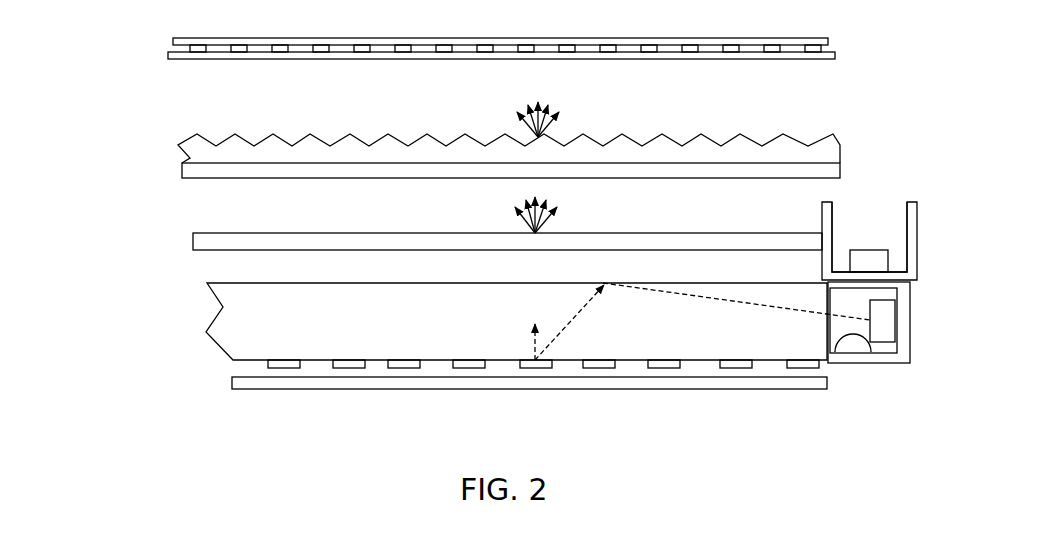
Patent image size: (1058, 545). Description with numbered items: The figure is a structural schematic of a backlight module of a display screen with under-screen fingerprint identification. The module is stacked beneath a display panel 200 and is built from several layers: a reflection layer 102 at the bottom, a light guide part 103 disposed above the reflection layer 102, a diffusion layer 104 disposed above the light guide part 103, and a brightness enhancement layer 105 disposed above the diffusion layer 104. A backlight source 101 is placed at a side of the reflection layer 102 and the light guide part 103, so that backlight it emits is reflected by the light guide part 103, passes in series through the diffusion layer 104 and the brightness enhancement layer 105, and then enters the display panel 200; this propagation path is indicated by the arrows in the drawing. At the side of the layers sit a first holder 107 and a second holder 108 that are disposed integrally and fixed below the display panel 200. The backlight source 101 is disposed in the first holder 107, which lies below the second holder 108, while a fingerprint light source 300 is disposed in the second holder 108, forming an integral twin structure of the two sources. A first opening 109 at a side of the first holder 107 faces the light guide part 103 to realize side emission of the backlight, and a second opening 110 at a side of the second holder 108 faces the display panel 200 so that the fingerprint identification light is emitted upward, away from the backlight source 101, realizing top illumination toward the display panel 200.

The display panel 200 is at (156, 45).
The brightness enhancement layer 105 is at (180, 172).
The diffusion layer 104 is at (193, 240).
The light guide part 103 is at (222, 313).
The reflection layer 102 is at (232, 384).
The backlight source 101 is at (883, 342).
The first holder 107 is at (903, 320).
The second holder 108 is at (913, 242).
The first opening 109 is at (864, 346).
The second opening 110 is at (905, 218).
The fingerprint light source 300 is at (882, 258).